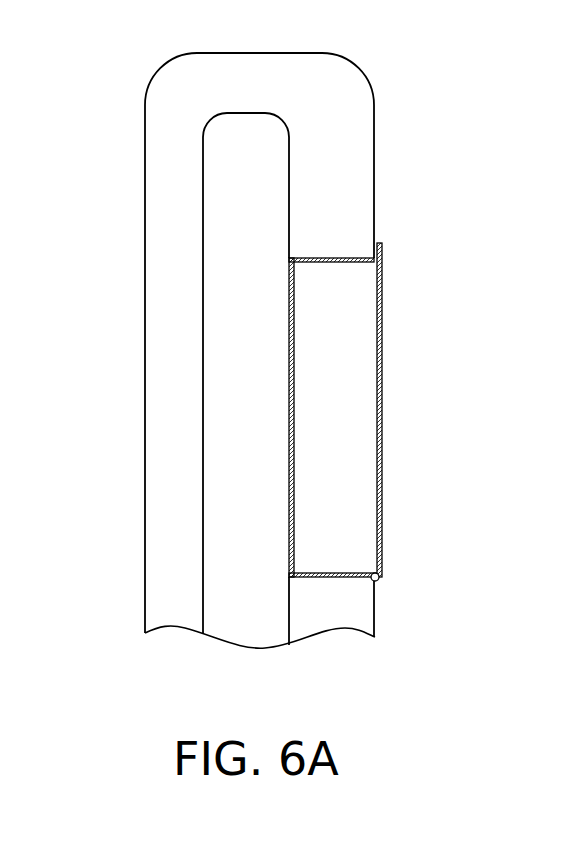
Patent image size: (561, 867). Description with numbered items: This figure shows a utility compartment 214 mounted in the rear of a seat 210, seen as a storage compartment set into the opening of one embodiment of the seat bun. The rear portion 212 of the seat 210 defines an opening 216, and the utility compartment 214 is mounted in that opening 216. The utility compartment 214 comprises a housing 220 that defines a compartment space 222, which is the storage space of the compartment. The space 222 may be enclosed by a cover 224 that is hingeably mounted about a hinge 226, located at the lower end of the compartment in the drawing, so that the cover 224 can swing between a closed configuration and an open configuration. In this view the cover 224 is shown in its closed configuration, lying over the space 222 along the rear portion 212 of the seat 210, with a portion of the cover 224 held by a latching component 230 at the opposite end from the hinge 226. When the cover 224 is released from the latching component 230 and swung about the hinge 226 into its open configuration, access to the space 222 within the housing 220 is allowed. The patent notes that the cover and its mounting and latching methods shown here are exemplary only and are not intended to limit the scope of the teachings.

The seat 210 is at (427, 104).
The rear portion 212 is at (375, 184).
The utility compartment 214 is at (393, 416).
The opening 216 is at (332, 589).
The housing 220 is at (328, 252).
The compartment space 222 is at (360, 407).
The cover 224 is at (383, 448).
The hinge 226 is at (381, 581).
The latching component 230 is at (379, 243).